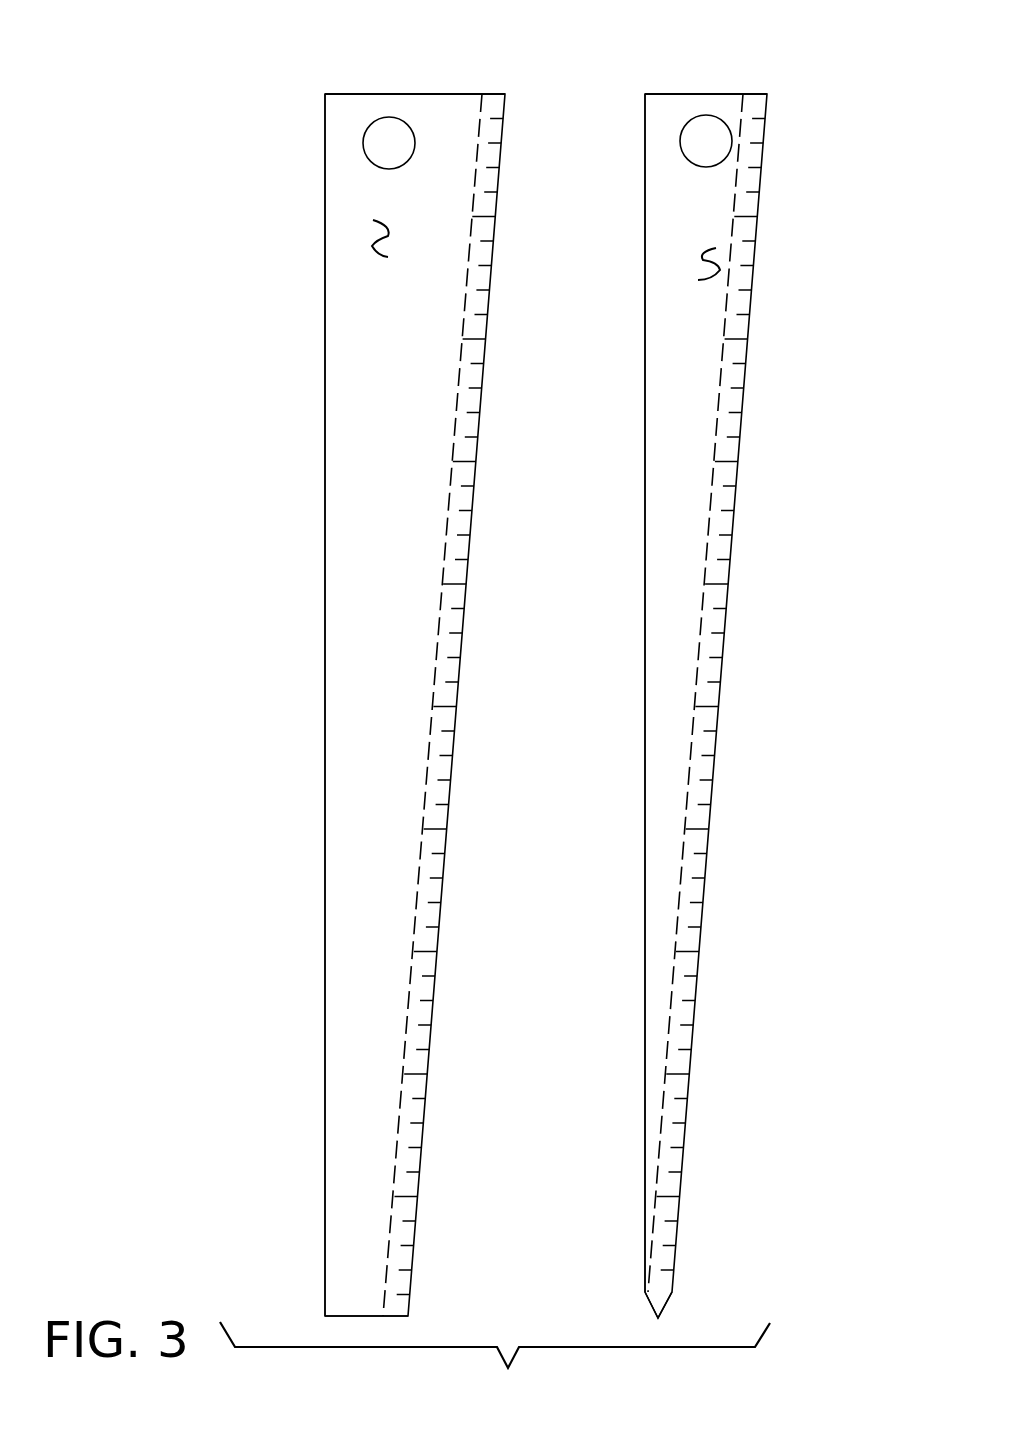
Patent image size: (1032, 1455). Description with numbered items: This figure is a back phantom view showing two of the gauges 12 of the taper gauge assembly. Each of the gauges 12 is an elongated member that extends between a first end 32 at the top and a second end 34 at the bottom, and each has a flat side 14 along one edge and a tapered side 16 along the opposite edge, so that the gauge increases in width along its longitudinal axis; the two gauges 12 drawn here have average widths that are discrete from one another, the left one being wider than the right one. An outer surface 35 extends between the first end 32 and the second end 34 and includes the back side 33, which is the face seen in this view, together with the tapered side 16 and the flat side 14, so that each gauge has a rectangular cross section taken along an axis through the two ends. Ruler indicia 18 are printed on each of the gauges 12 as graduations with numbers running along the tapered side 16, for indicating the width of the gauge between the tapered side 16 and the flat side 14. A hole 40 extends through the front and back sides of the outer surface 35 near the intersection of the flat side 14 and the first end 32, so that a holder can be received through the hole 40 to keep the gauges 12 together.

The gauges 12 is at (325, 73).
The flat side 14 is at (325, 368).
The tapered side 16 is at (490, 315).
The ruler indicia 18 is at (393, 568).
The first end 32 is at (440, 95).
The back side 33 is at (348, 677).
The second end 34 is at (343, 1315).
The outer surface 35 is at (372, 244).
The hole 40 is at (373, 148).